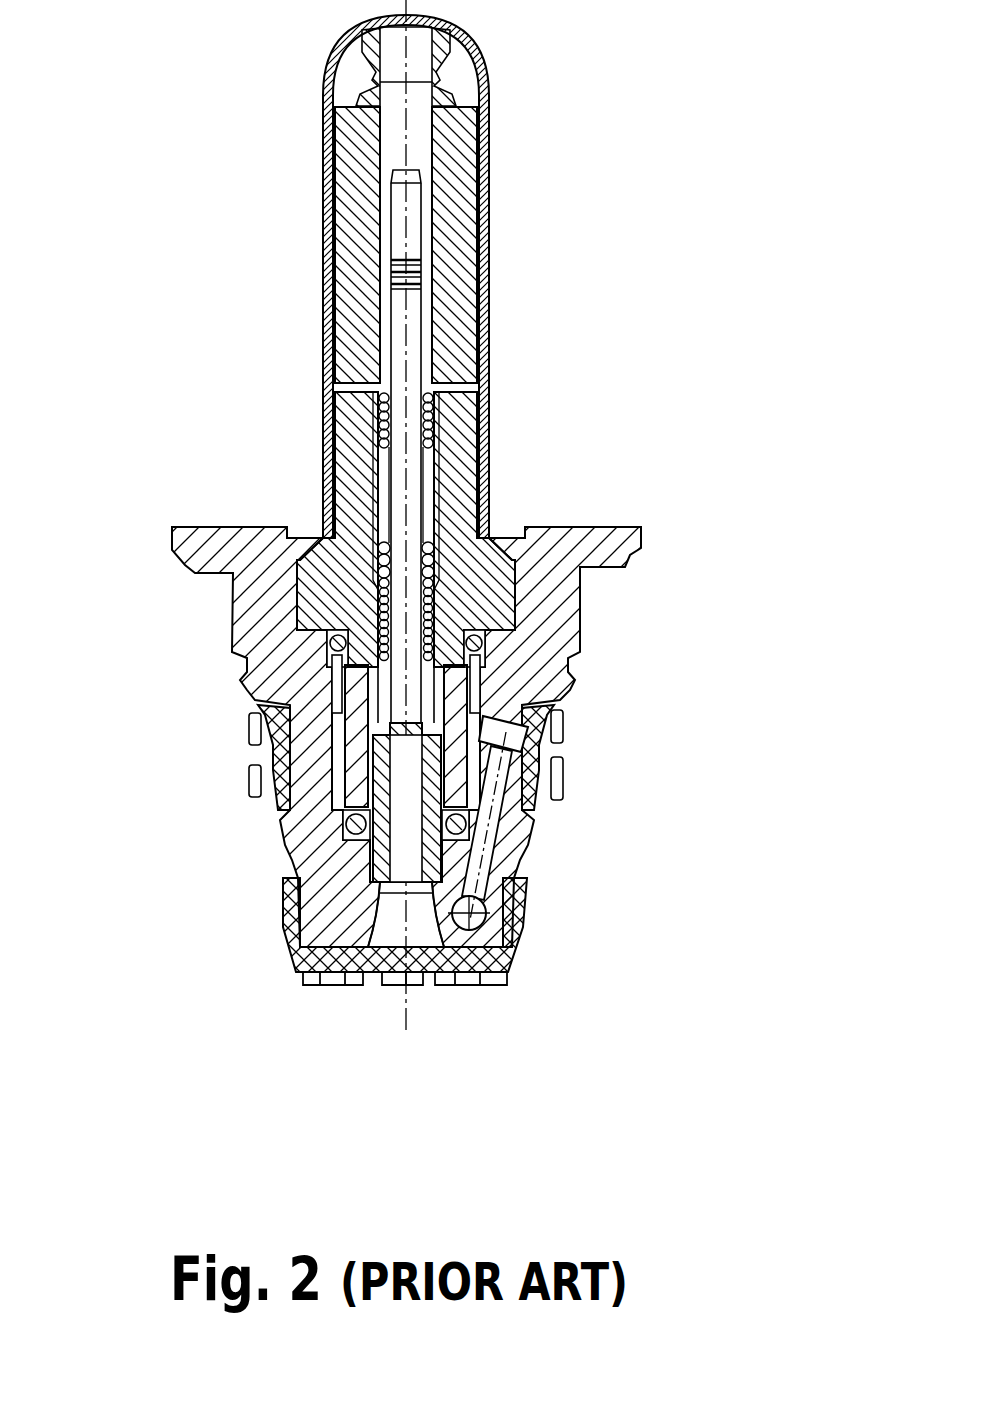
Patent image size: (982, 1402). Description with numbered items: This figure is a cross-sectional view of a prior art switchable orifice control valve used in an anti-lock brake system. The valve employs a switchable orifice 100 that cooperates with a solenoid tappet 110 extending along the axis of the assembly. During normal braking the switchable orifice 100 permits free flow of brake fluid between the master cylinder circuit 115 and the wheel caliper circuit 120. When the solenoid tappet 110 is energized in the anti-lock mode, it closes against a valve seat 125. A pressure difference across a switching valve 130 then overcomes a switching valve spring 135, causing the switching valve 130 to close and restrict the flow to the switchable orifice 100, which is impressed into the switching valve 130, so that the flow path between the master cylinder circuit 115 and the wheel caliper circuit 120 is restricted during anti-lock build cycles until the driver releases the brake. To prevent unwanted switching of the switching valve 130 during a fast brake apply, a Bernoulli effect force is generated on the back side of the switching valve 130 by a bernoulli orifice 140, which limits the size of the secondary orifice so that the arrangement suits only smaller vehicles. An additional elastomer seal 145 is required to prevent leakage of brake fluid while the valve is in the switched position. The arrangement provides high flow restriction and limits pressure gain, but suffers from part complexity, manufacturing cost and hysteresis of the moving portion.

The switchable orifice 100 is at (272, 797).
The solenoid tappet 110 is at (408, 708).
The master cylinder circuit 115 is at (563, 725).
The wheel caliper circuit 120 is at (400, 975).
The valve seat 125 is at (467, 758).
The switching valve 130 is at (290, 892).
The switching valve spring 135 is at (482, 638).
The bernoulli orifice 140 is at (378, 955).
The elastomer seal 145 is at (467, 826).